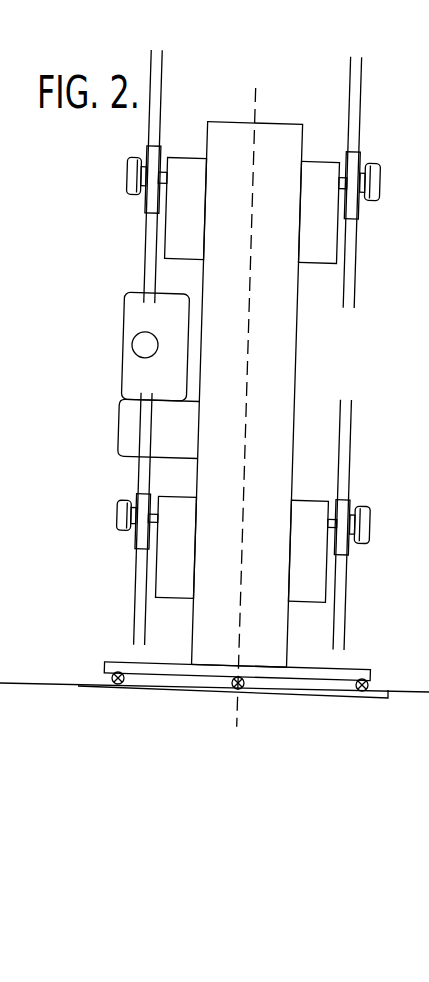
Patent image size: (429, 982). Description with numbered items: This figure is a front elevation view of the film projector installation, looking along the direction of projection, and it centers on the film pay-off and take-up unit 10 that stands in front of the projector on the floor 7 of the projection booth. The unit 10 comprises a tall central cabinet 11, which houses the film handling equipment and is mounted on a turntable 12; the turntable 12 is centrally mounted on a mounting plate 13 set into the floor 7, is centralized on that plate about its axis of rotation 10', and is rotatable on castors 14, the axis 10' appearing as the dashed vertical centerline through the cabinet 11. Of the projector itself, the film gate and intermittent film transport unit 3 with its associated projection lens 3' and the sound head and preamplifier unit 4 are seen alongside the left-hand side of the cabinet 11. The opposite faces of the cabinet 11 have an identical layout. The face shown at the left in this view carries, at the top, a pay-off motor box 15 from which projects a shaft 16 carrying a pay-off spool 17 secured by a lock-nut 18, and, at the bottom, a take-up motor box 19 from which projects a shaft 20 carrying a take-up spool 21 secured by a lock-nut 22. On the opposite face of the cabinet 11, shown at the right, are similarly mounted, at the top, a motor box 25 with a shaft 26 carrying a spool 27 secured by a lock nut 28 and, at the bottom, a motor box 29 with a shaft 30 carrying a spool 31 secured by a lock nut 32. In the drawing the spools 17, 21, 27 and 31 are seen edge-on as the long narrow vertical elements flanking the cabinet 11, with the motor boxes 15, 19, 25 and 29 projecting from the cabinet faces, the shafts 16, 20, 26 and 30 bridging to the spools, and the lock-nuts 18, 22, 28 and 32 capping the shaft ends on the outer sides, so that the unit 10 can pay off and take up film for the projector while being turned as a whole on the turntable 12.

The film pay-off and take-up unit 10 is at (214, 388).
The axis of rotation 10' is at (252, 392).
The central cabinet 11 is at (275, 123).
The turntable 12 is at (303, 672).
The mounting plate 13 is at (383, 685).
The castors 14 is at (110, 679).
The floor 7 is at (32, 683).
The pay-off spool 17 is at (148, 135).
The take-up spool 21 is at (138, 476).
The spool 27 is at (347, 83).
The spool 31 is at (347, 423).
The pay-off motor box 15 is at (181, 163).
The shaft 16 is at (163, 173).
The lock-nut 18 is at (122, 171).
The motor box 25 is at (329, 170).
The shaft 26 is at (343, 177).
The lock nut 28 is at (371, 200).
The take-up motor box 19 is at (178, 592).
The shaft 20 is at (151, 514).
The lock-nut 22 is at (118, 513).
The motor box 29 is at (315, 597).
The shaft 30 is at (331, 519).
The lock nut 32 is at (363, 505).
The film gate and intermittent film transport unit 3 is at (150, 327).
The projection lens 3' is at (122, 343).
The sound head and preamplifier unit 4 is at (120, 426).